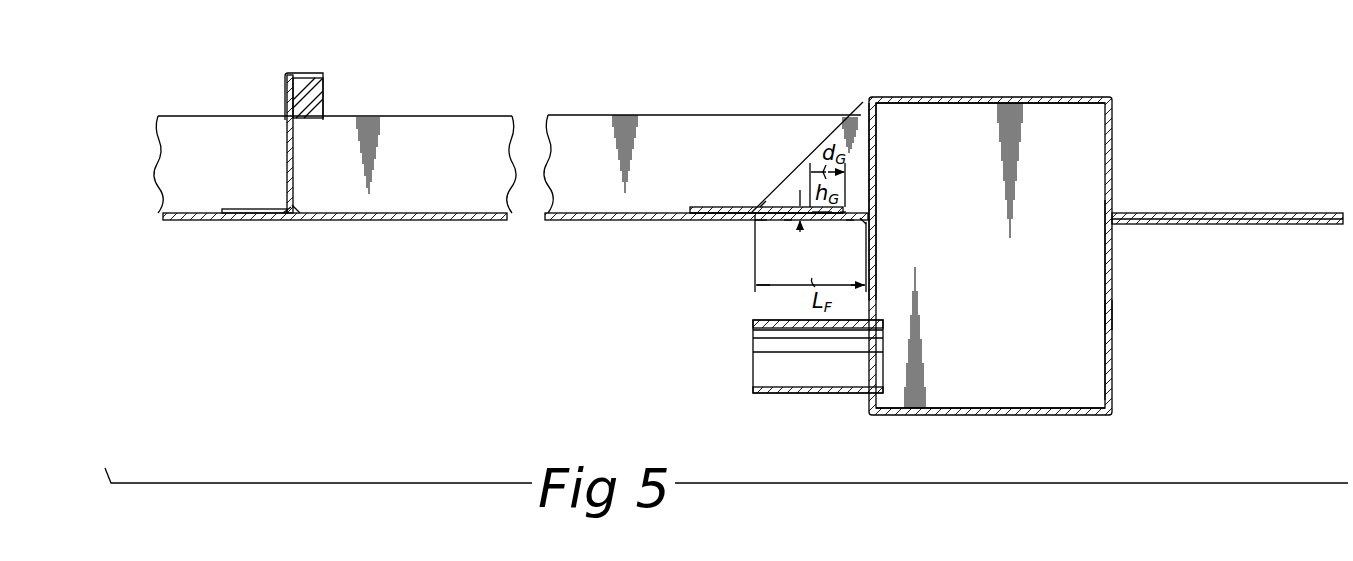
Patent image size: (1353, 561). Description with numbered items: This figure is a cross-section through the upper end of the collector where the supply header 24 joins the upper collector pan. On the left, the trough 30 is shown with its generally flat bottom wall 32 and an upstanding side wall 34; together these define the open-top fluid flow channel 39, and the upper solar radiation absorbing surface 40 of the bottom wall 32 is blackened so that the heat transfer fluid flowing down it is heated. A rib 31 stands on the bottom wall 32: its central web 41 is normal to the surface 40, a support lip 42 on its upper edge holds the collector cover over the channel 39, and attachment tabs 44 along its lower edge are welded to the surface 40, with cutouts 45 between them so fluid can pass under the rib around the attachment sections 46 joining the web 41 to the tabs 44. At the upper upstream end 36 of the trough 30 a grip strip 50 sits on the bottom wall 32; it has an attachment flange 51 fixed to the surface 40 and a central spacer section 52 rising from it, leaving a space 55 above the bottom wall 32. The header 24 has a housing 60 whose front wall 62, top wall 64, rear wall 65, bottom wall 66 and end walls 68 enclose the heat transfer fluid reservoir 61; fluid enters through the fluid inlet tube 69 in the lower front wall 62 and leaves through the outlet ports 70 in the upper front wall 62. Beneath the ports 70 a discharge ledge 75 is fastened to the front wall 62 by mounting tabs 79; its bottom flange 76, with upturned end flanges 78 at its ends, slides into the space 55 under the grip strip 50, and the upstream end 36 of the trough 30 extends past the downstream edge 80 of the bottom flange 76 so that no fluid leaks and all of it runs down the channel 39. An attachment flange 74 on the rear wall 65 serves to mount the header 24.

The supply header 24 is at (1070, 96).
The trough 30 is at (640, 94).
The rib 31 is at (284, 141).
The bottom wall 32 is at (575, 221).
The side wall 34 is at (702, 164).
The upper upstream end 36 is at (820, 230).
The fluid flow channel 39 is at (442, 130).
The solar radiation absorbing surface 40 is at (380, 210).
The central web 41 is at (294, 167).
The support lip 42 is at (297, 74).
The attachment tab 44 is at (270, 210).
The cutout 45 is at (292, 208).
The attachment section 46 is at (297, 218).
The grip strip 50 is at (742, 207).
The attachment flange 51 is at (702, 209).
The central spacer section 52 is at (757, 218).
The space 55 is at (788, 222).
The housing 60 is at (1114, 176).
The heat transfer fluid reservoir 61 is at (1080, 289).
The front wall 62 is at (878, 263).
The top wall 64 is at (952, 104).
The rear wall 65 is at (1105, 316).
The bottom wall 66 is at (1016, 411).
The end wall 68 is at (984, 341).
The fluid inlet tube 69 is at (790, 393).
The outlet port 70 is at (877, 165).
The attachment flange 74 is at (1247, 213).
The discharge ledge 75 is at (852, 221).
The bottom flange 76 is at (842, 213).
The upturned end flange 78 is at (855, 124).
The mounting tab 79 is at (863, 243).
The downstream edge 80 is at (763, 208).